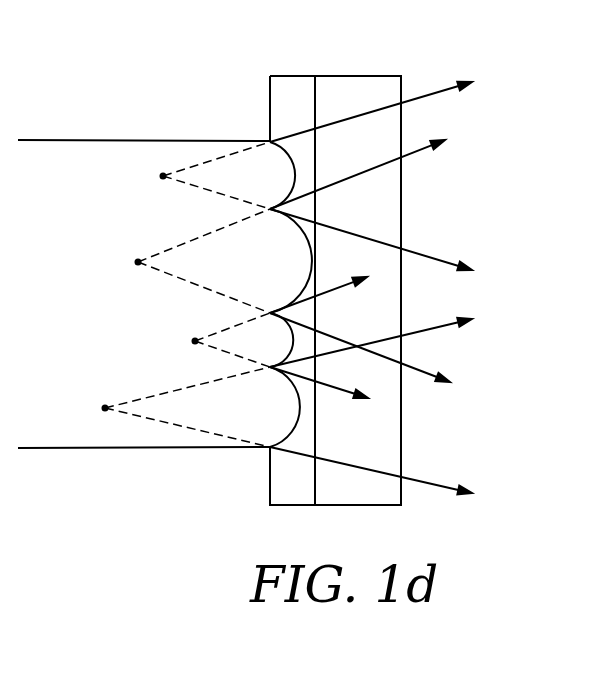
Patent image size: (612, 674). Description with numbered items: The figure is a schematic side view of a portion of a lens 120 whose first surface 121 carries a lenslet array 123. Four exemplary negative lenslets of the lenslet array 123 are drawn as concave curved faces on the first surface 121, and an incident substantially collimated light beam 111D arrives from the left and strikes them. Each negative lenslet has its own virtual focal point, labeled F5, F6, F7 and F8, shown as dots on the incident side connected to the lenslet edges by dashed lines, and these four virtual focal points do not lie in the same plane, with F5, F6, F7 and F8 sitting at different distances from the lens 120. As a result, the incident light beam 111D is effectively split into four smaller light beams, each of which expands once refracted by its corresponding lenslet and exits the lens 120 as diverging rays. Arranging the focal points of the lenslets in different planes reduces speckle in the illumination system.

The incident substantially collimated light beam 111D is at (70, 157).
The lens 120 is at (352, 88).
The first surface 121 is at (270, 102).
The lenslet array 123 is at (285, 485).
The virtual focal point F5 is at (195, 175).
The virtual focal point F6 is at (182, 261).
The virtual focal point F7 is at (211, 340).
The virtual focal point F8 is at (166, 407).